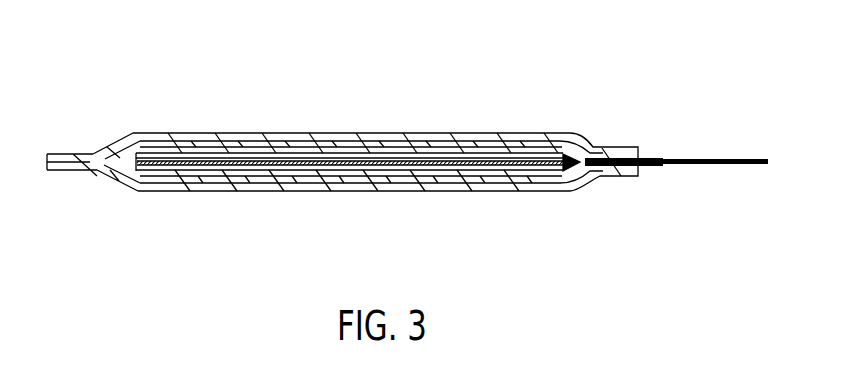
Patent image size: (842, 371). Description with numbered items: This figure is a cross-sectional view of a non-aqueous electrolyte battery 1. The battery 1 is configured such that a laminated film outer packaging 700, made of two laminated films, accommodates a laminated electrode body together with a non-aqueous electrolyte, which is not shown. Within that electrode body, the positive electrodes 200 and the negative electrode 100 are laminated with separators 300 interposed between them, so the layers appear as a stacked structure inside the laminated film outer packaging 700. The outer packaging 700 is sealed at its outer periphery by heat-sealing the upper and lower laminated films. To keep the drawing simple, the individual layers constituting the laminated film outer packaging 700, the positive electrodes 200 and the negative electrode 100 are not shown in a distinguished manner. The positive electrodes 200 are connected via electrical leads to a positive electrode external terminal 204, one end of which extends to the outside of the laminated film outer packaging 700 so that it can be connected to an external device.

The non-aqueous electrolyte battery 1 is at (464, 100).
The laminated film outer packaging 700 is at (210, 143).
The positive electrodes 200 is at (310, 147).
The negative electrode 100 is at (240, 170).
The separators 300 is at (408, 175).
The positive electrode external terminal 204 is at (665, 158).